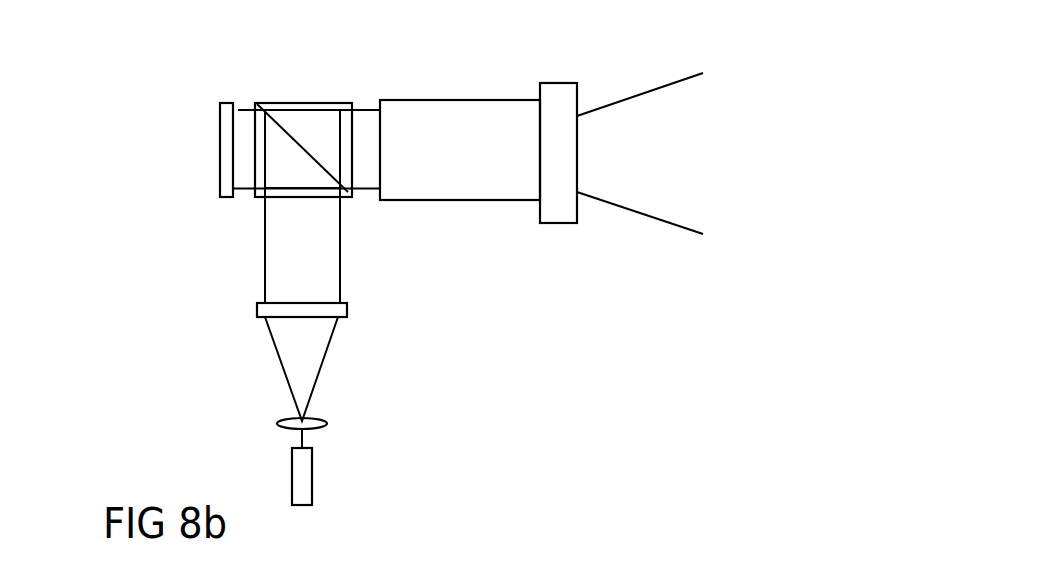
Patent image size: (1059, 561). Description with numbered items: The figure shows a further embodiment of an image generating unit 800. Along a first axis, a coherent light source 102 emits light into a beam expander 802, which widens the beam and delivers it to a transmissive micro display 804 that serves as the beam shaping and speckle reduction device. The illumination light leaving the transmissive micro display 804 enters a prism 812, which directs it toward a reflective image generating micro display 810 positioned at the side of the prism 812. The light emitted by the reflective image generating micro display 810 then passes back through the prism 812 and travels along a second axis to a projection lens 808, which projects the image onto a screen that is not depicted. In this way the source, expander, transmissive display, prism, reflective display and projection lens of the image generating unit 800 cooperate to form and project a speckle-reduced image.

The image generating unit 800 is at (151, 80).
The reflective image generating micro display 810 is at (220, 173).
The prism 812 is at (316, 100).
The projection lens 808 is at (487, 100).
The transmissive micro display 804 is at (348, 311).
The beam expander 802 is at (327, 421).
The coherent light source 102 is at (313, 483).